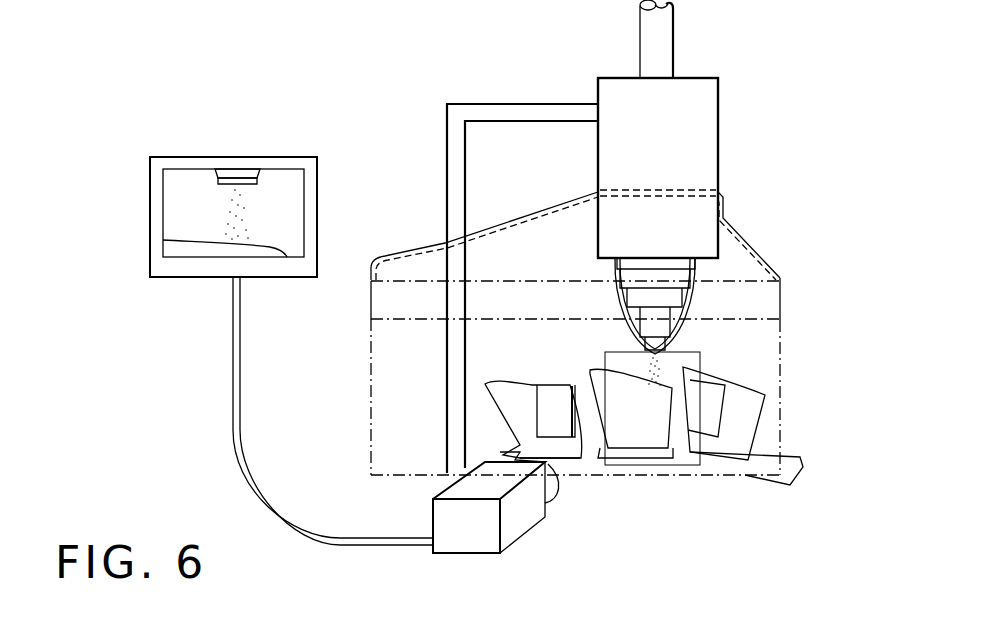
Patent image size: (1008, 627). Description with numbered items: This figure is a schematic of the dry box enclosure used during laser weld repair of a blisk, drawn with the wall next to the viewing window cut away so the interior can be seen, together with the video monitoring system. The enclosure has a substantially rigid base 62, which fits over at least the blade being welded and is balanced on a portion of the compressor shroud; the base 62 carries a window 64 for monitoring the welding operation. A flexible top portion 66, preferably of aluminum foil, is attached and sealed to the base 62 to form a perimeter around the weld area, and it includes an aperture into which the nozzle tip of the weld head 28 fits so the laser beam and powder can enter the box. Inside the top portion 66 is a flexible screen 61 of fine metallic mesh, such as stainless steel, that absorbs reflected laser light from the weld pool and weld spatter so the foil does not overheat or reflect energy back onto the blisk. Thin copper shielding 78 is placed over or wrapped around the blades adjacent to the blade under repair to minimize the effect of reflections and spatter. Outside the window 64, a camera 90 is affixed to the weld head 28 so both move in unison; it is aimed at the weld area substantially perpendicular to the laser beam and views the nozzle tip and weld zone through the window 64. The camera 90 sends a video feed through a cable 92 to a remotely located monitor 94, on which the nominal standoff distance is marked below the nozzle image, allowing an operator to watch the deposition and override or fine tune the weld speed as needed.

The weld head 28 is at (700, 77).
The flexible screen 61 is at (736, 224).
The base 62 is at (783, 406).
The window 64 is at (617, 364).
The top portion 66 is at (745, 238).
The copper shielding 78 is at (710, 400).
The camera 90 is at (485, 539).
The cable 92 is at (242, 345).
The monitor 94 is at (275, 157).